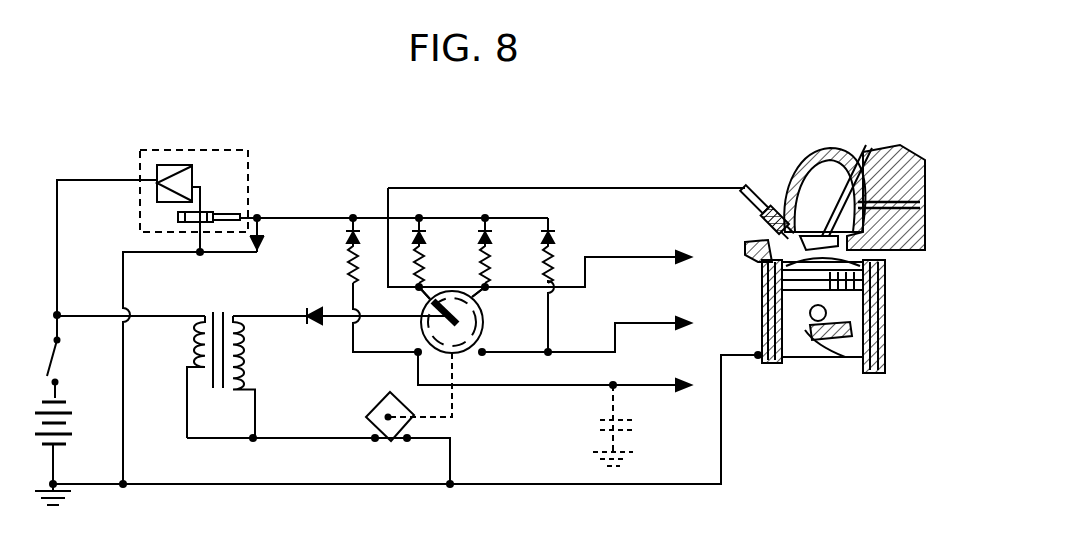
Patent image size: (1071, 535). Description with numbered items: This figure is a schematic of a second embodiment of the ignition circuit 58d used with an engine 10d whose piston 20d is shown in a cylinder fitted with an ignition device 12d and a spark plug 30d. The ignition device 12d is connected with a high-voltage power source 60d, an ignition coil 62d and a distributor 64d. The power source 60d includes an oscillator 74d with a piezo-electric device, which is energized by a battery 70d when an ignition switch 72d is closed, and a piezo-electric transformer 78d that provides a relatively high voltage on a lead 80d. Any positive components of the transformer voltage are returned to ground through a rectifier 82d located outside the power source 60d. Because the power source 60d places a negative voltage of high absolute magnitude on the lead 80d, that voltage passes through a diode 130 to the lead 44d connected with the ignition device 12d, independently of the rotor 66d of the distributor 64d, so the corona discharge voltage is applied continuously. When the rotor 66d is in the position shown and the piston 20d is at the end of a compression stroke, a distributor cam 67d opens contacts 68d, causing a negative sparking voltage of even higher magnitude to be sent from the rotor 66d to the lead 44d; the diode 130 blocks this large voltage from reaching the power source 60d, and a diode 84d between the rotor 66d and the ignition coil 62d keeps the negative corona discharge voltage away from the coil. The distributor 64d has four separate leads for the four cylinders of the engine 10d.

The engine 10d is at (792, 244).
The ignition device 12d is at (762, 190).
The piston 20d is at (817, 356).
The spark plug 30d is at (745, 213).
The lead 44d is at (626, 189).
The ignition circuit 58d is at (500, 180).
The high-voltage power source 60d is at (256, 145).
The ignition coil 62d is at (240, 266).
The distributor 64d is at (478, 321).
The rotor 66d is at (473, 252).
The distributor cam 67d is at (378, 402).
The contacts 68d is at (388, 446).
The battery 70d is at (68, 417).
The ignition switch 72d is at (58, 360).
The oscillator 74d is at (178, 165).
The piezo-electric transformer 78d is at (214, 212).
The lead 80d is at (359, 226).
The rectifier 82d is at (260, 249).
The diode 84d is at (312, 330).
The diode 130 is at (424, 232).